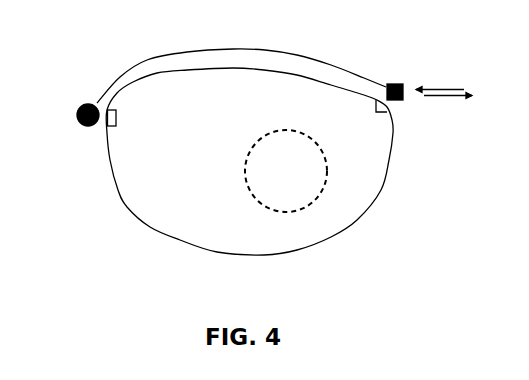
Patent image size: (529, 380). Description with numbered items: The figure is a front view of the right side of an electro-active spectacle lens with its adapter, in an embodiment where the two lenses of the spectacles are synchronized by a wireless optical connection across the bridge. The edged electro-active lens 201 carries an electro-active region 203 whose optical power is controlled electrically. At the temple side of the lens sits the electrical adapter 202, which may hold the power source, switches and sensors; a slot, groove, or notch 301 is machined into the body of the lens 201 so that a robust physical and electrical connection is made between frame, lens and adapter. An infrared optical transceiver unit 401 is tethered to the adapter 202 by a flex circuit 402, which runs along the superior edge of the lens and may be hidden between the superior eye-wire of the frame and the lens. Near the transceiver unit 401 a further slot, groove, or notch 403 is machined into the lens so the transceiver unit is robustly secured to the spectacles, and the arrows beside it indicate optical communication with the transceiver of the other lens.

The electro-active lens 201 is at (247, 230).
The electrical adapter 202 is at (80, 125).
The electro-active region 203 is at (317, 192).
The slot, groove, or notch 301 is at (117, 122).
The infrared optical transceiver unit 401 is at (396, 83).
The flex circuit 402 is at (122, 73).
The slot, groove, or notch 403 is at (374, 113).